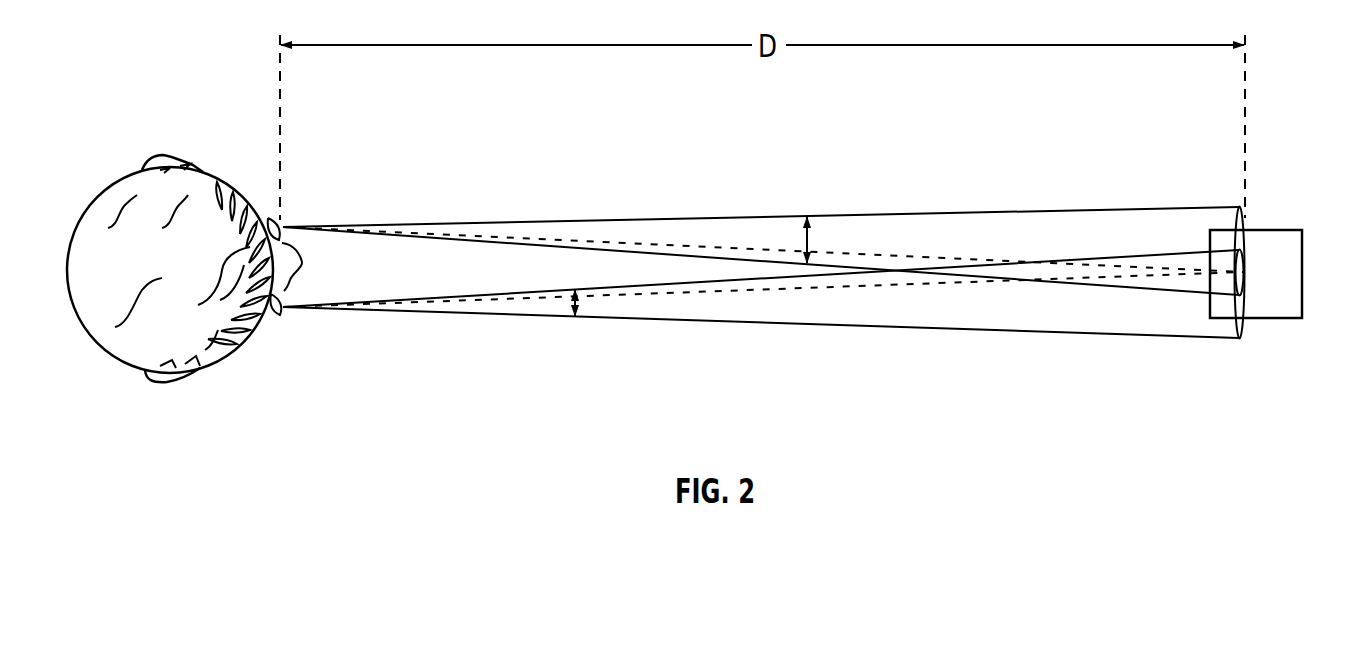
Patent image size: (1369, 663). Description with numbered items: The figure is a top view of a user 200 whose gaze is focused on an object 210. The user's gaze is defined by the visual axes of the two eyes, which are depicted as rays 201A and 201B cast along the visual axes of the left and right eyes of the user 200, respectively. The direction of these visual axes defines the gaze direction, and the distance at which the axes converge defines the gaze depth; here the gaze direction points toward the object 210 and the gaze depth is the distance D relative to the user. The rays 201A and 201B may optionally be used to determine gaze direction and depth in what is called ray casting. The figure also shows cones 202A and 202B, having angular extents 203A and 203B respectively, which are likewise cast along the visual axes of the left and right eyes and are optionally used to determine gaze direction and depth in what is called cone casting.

The user 200 is at (136, 108).
The ray 201A is at (600, 242).
The ray 201B is at (668, 297).
The cone 202A is at (1145, 206).
The cone 202B is at (1172, 340).
The angular extent 203A is at (809, 258).
The angular extent 203B is at (571, 306).
The object 210 is at (1267, 211).